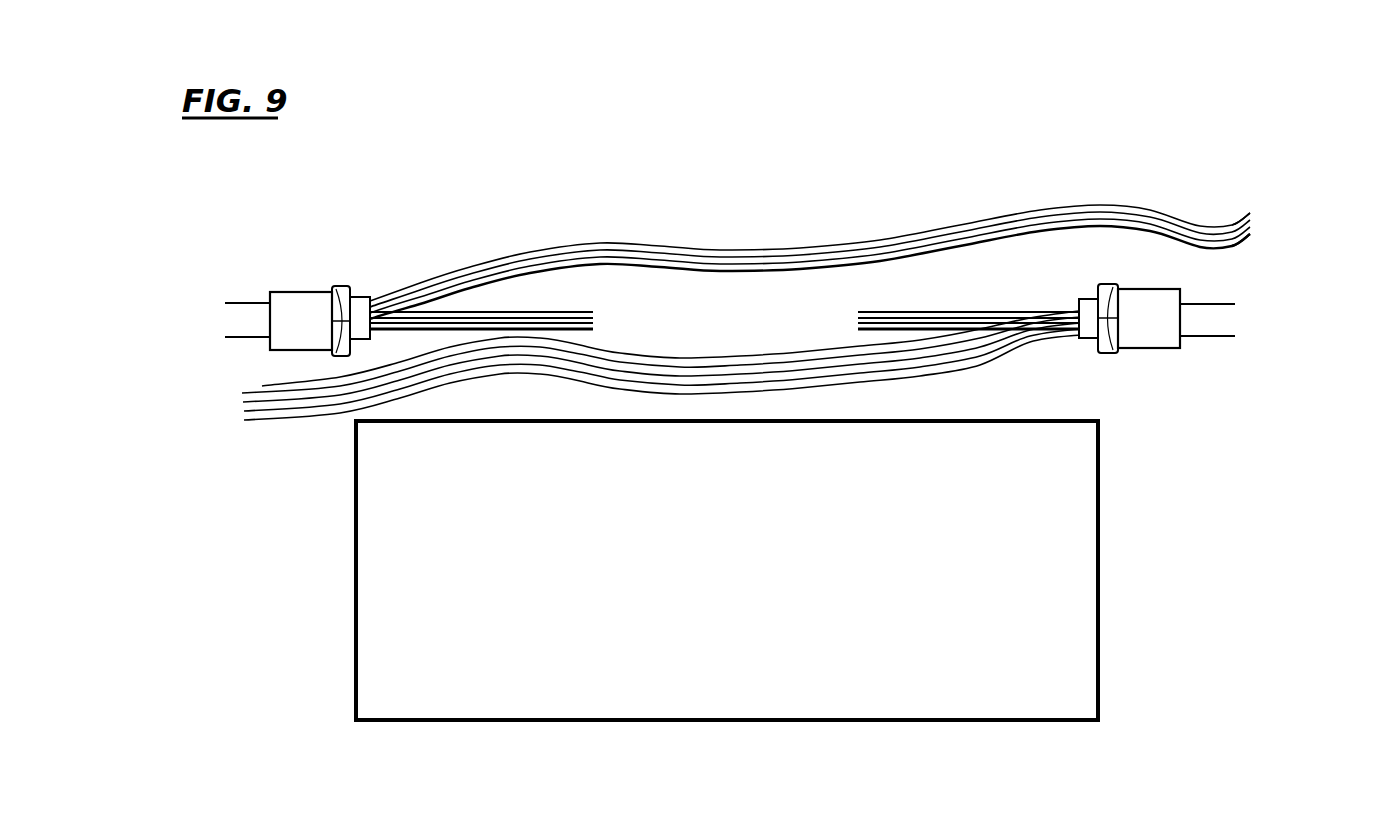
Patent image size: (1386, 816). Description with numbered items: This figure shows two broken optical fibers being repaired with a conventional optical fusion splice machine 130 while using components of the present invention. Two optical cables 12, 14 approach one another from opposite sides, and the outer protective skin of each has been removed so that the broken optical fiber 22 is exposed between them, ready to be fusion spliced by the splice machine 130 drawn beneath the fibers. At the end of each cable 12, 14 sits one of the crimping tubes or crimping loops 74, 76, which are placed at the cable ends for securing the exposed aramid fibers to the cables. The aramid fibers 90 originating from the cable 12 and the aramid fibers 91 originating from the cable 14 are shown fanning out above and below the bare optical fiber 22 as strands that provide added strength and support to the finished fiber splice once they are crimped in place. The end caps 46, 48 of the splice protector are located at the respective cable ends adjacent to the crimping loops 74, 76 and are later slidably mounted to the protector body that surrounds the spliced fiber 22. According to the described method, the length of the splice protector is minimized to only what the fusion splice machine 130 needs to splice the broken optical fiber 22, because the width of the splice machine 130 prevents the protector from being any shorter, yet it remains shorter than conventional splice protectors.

The cable 12 is at (246, 322).
The cable 14 is at (1250, 234).
The optical fiber 22 is at (1060, 315).
The end cap 46 is at (359, 301).
The end cap 48 is at (1216, 302).
The crimping loop 74 is at (310, 334).
The crimping loop 76 is at (1147, 332).
The aramid fibers 90 is at (320, 416).
The aramid fibers 91 is at (705, 243).
The fusion splice machine 130 is at (1080, 621).